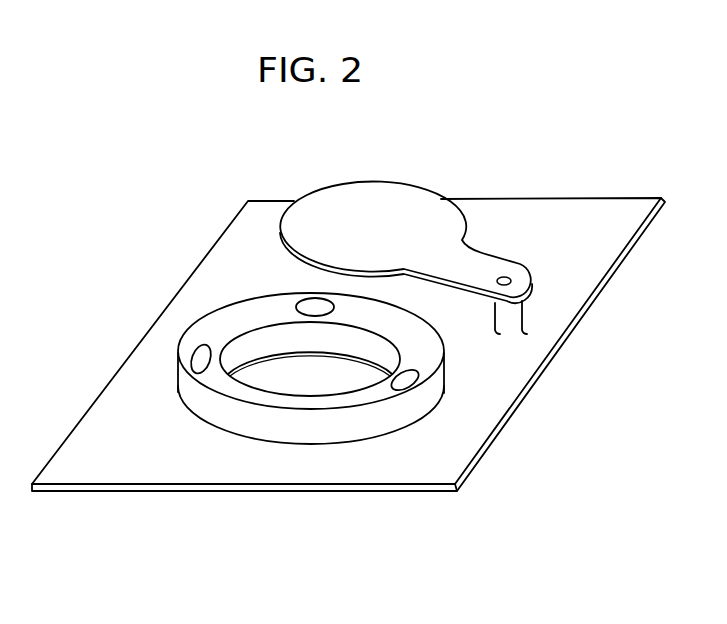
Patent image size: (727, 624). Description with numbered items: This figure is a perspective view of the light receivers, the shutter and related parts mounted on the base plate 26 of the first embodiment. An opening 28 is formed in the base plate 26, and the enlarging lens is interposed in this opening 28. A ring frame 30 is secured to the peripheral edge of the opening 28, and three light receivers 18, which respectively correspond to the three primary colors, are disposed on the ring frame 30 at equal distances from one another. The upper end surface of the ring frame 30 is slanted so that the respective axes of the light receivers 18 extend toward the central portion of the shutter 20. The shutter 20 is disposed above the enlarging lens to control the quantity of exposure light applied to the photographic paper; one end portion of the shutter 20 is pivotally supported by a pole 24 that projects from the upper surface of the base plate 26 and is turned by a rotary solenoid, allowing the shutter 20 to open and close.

The light receivers 18 is at (312, 303).
The shutter 20 is at (385, 212).
The pole 24 is at (518, 312).
The base plate 26 is at (496, 398).
The opening 28 is at (318, 390).
The ring frame 30 is at (424, 327).